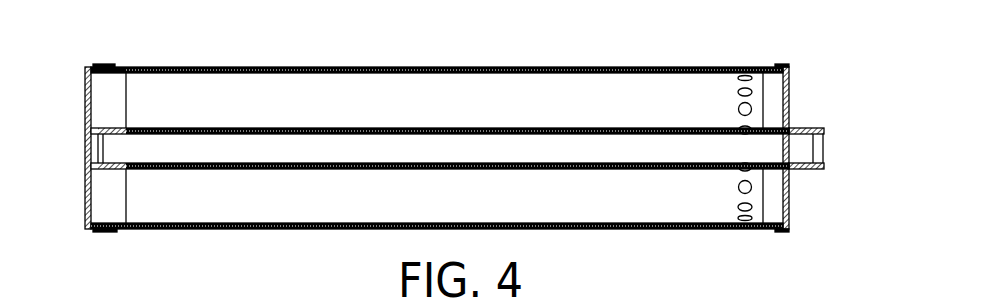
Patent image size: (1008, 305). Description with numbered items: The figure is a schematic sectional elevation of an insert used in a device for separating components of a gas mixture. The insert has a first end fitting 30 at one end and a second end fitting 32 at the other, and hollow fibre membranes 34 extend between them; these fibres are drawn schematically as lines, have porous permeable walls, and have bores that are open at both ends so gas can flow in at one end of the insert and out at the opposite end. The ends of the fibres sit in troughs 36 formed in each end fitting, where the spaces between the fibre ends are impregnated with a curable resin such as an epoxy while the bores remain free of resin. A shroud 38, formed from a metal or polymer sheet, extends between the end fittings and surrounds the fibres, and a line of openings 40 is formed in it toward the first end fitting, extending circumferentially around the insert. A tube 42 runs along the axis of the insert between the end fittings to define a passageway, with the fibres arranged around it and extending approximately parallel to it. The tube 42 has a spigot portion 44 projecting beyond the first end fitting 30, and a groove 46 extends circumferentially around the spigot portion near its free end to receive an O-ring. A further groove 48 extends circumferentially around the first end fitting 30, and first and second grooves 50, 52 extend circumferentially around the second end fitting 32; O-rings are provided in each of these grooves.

The first end fitting 30 is at (782, 66).
The second end fitting 32 is at (110, 65).
The hollow fibre membranes 34 is at (396, 112).
The troughs 36 is at (112, 90).
The shroud 38 is at (322, 67).
The openings 40 is at (745, 109).
The tube 42 is at (485, 143).
The spigot portion 44 is at (794, 129).
The groove 46 is at (823, 170).
The groove 48 is at (781, 232).
The first groove 50 is at (79, 259).
The second groove 52 is at (102, 233).